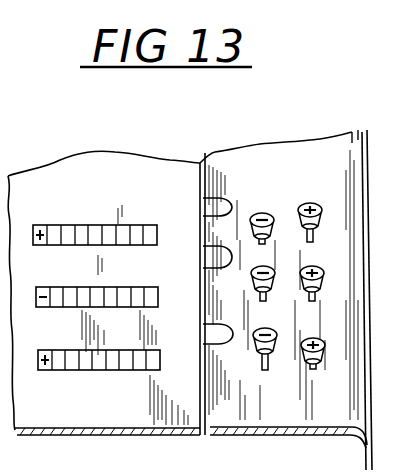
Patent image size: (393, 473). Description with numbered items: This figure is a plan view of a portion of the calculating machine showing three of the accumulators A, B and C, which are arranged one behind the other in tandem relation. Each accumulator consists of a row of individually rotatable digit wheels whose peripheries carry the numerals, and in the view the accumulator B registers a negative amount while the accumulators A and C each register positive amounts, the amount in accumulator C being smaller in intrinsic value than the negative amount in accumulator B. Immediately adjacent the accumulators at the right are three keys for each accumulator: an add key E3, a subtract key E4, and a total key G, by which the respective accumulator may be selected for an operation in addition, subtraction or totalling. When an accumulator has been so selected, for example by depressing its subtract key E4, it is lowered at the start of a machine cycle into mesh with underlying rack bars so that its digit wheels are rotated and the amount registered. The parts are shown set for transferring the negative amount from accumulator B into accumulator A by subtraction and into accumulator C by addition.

The total key G is at (223, 206).
The subtract key E4 is at (266, 214).
The add key E3 is at (315, 204).
The accumulator A is at (108, 237).
The accumulator B is at (110, 298).
The accumulator C is at (112, 362).